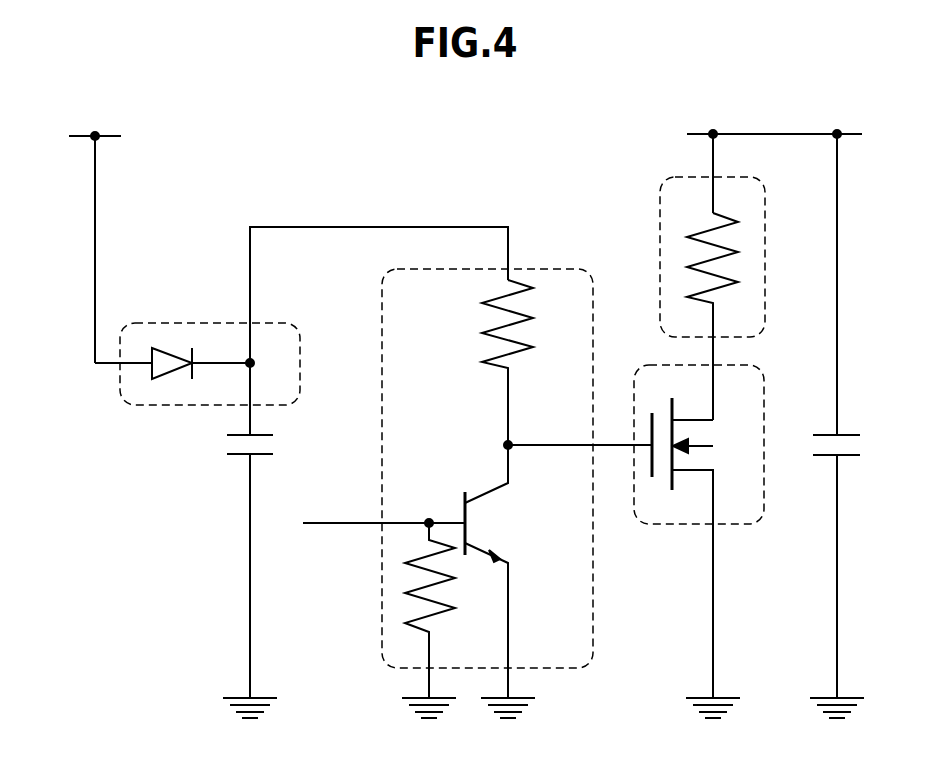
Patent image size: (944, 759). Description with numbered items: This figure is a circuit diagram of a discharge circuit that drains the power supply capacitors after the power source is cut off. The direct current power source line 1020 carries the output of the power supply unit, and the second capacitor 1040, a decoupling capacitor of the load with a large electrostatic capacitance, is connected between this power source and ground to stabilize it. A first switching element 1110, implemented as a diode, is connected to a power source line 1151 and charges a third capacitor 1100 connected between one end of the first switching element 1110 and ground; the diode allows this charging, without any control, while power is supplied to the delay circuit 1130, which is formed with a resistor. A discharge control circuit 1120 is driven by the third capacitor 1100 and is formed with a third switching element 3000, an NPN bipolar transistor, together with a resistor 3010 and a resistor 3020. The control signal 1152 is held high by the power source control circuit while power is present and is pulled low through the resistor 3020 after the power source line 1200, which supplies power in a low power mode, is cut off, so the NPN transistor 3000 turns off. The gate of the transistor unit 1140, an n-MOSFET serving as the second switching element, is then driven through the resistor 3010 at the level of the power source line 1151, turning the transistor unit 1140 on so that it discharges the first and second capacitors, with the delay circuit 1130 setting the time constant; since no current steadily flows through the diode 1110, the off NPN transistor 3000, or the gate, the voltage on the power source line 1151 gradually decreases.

The direct current power source line 1020 is at (772, 132).
The second capacitor 1040 is at (830, 457).
The third capacitor 1100 is at (243, 456).
The first switching element 1110 is at (173, 322).
The discharge control circuit 1120 is at (382, 297).
The delay circuit 1130 is at (660, 223).
The transistor unit 1140 is at (668, 526).
The power source line 1151 is at (377, 226).
The control signal 1152 is at (335, 525).
The power source line 1200 is at (97, 192).
The third switching element 3000 is at (497, 526).
The resistor 3010 is at (504, 371).
The resistor 3020 is at (447, 612).